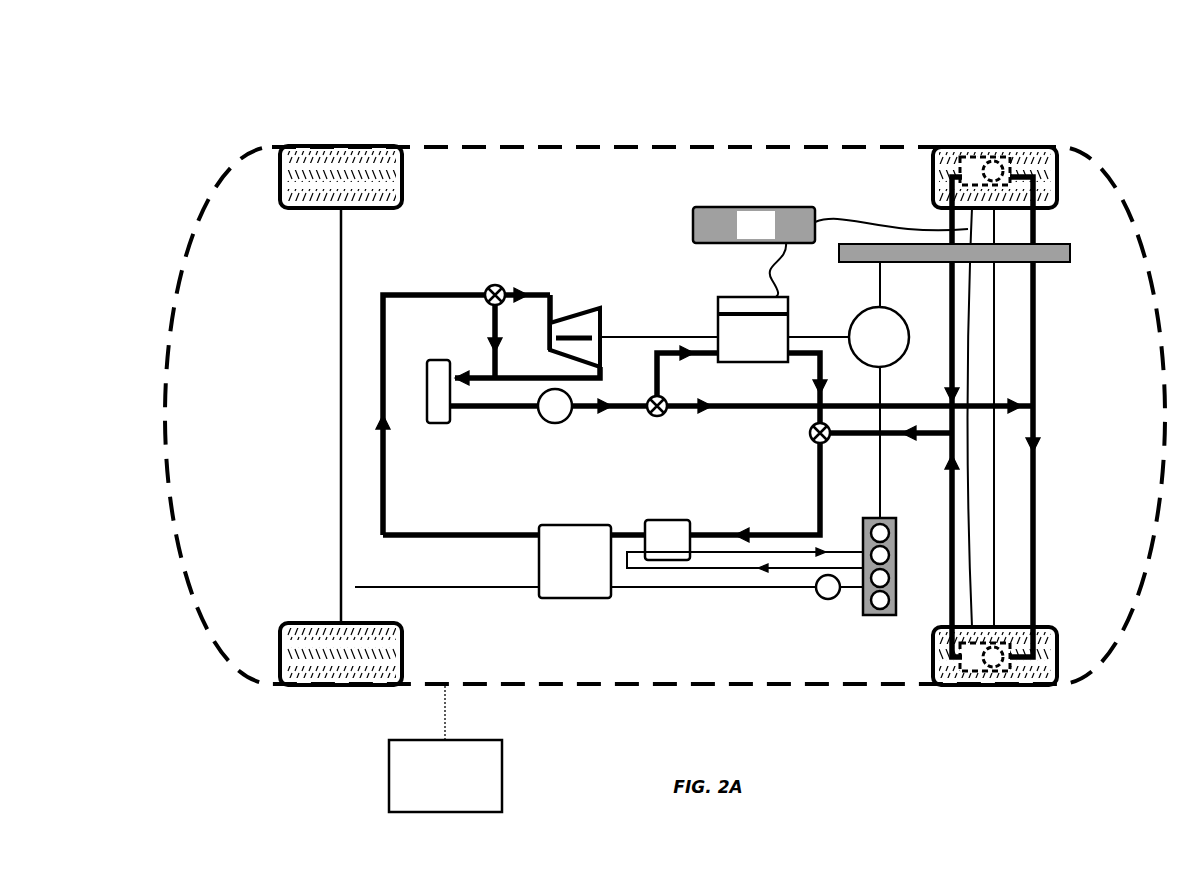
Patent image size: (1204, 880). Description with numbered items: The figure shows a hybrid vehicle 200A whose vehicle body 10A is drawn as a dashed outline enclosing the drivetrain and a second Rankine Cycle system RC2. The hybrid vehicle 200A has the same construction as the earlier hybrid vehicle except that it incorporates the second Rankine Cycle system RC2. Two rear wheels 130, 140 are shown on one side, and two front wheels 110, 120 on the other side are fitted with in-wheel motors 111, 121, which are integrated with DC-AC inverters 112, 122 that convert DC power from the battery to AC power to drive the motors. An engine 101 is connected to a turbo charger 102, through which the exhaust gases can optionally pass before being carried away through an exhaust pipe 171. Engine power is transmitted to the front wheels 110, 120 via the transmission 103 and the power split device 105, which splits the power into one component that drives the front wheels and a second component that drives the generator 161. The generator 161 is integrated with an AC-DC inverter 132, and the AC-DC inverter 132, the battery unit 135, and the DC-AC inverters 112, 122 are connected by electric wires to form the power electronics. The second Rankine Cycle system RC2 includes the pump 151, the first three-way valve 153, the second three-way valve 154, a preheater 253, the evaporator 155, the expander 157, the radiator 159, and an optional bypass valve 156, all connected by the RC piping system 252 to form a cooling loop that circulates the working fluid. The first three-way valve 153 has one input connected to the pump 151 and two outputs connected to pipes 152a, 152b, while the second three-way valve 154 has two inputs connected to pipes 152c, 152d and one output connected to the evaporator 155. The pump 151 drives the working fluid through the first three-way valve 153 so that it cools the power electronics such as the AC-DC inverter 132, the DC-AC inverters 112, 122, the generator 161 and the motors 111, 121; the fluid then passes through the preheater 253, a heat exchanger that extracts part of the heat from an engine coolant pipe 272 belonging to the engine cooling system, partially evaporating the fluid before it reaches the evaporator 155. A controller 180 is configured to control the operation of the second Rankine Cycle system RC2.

The vehicle body 10A is at (597, 141).
The hybrid vehicle 200A is at (1112, 106).
The rear wheel 130 is at (281, 152).
The rear wheel 140 is at (282, 656).
The front wheel 110 is at (1044, 147).
The front wheel 120 is at (1043, 686).
The DC-AC inverter 112 is at (975, 170).
The in-wheel motor 111 is at (990, 158).
The DC-AC inverter 122 is at (965, 684).
The in-wheel motor 121 is at (998, 684).
The transmission 103 is at (1074, 270).
The power split device 105 is at (879, 390).
The engine 101 is at (880, 617).
The turbo charger 102 is at (826, 600).
The battery unit 135 is at (830, 252).
The generator 161 is at (753, 329).
The AC-DC inverter 132 is at (720, 297).
The expander 157 is at (604, 306).
The bypass valve 156 is at (498, 285).
The radiator 159 is at (427, 376).
The pump 151 is at (548, 425).
The first three-way valve 153 is at (652, 420).
The second three-way valve 154 is at (814, 445).
The pipe 152a is at (661, 378).
The pipe 152b is at (708, 412).
The pipe 152c is at (818, 392).
The pipe 152d is at (859, 442).
The RC piping system 252 is at (396, 461).
The evaporator 155 is at (514, 561).
The preheater 253 is at (667, 540).
The engine coolant pipe 272 is at (784, 575).
The exhaust pipe 171 is at (450, 589).
The controller 180 is at (445, 749).
The second Rankine Cycle system RC2 is at (565, 251).